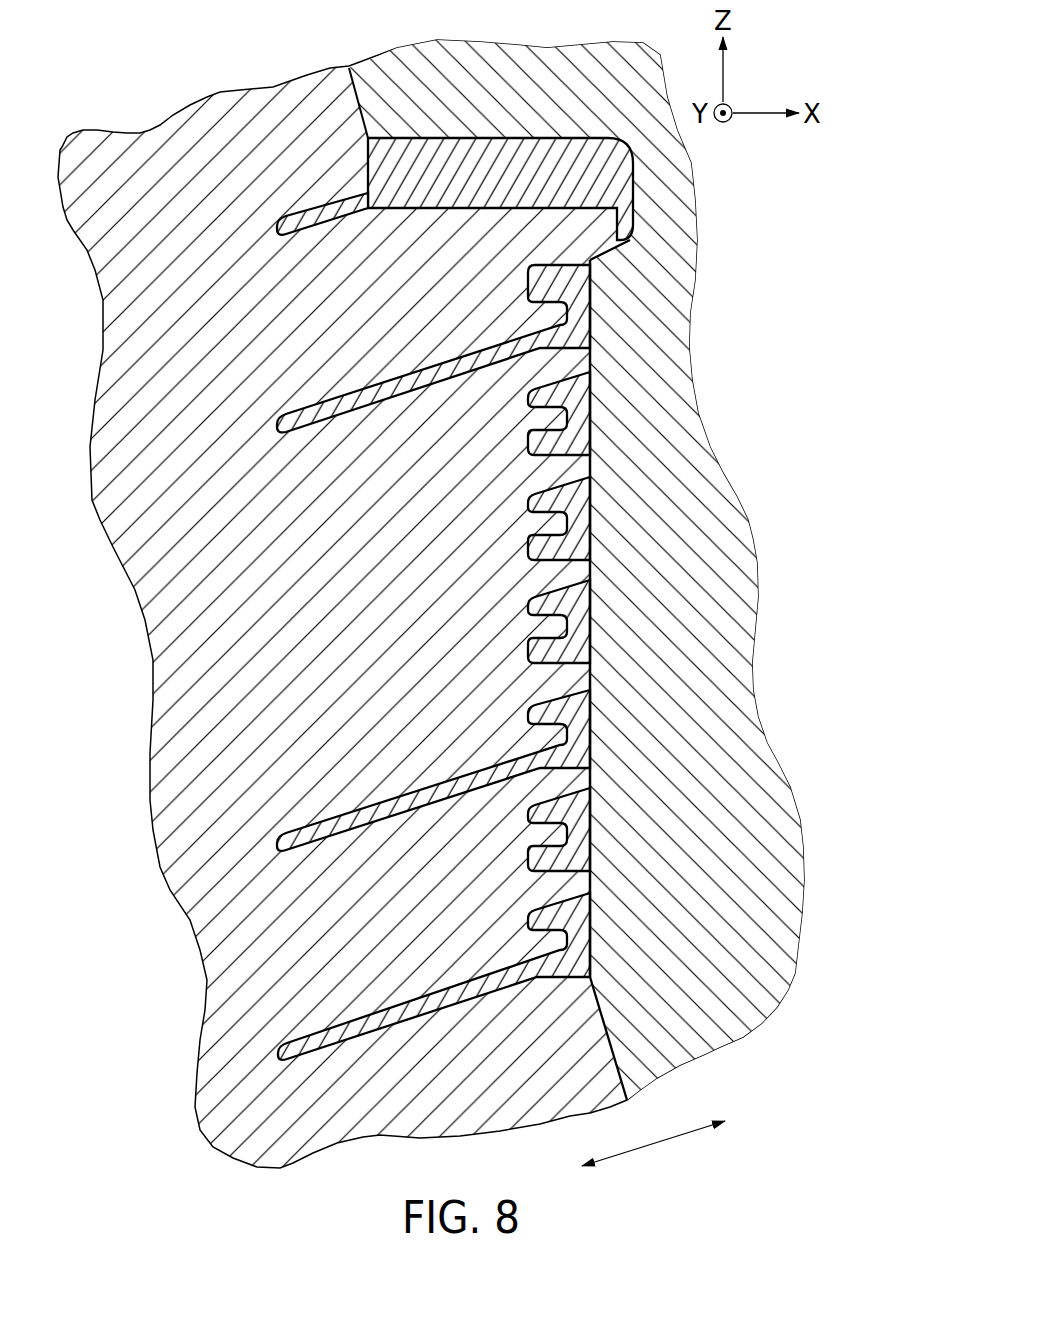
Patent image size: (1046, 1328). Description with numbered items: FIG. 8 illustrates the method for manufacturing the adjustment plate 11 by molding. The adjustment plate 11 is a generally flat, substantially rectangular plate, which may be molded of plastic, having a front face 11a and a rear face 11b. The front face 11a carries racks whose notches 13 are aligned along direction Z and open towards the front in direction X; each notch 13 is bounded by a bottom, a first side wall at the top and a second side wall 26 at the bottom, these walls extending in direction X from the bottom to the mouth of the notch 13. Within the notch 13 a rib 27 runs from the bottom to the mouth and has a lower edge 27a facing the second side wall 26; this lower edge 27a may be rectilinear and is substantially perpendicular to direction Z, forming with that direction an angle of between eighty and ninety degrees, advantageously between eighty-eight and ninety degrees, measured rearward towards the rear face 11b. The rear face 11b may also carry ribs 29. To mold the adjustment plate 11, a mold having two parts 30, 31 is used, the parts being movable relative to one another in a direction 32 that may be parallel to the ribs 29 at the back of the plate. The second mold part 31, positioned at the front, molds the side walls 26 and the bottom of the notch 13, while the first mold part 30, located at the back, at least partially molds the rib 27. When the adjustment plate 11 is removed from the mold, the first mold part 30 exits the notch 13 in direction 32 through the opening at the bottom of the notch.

The adjustment plate 11 is at (567, 127).
The front face 11a is at (598, 570).
The rear face 11b is at (431, 604).
The notch 13 is at (528, 467).
The second side wall 26 is at (593, 363).
The rib 27 is at (602, 345).
The lower edge 27a is at (598, 337).
The ribs 29 is at (322, 410).
The first mold part 30 is at (170, 722).
The second mold part 31 is at (732, 763).
The direction 32 is at (658, 1142).